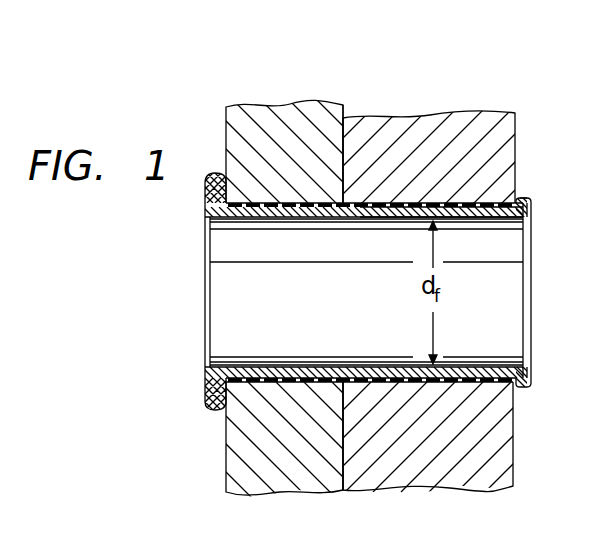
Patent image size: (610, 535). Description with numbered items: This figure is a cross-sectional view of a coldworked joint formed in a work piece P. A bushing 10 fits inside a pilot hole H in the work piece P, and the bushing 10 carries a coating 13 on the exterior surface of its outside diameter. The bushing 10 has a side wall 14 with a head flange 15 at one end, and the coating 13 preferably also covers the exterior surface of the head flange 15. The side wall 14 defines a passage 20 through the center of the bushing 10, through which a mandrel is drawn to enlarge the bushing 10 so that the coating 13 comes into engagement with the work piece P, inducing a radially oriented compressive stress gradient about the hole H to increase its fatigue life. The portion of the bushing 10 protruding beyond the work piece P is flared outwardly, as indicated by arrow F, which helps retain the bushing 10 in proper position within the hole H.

The bushing 10 is at (205, 283).
The coating 13 is at (298, 208).
The side wall 14 is at (372, 208).
The head flange 15 is at (207, 387).
The passage 20 is at (531, 296).
The work piece P is at (351, 300).
The arrow indicating outward flaring F is at (530, 199).
The pilot hole H is at (262, 383).